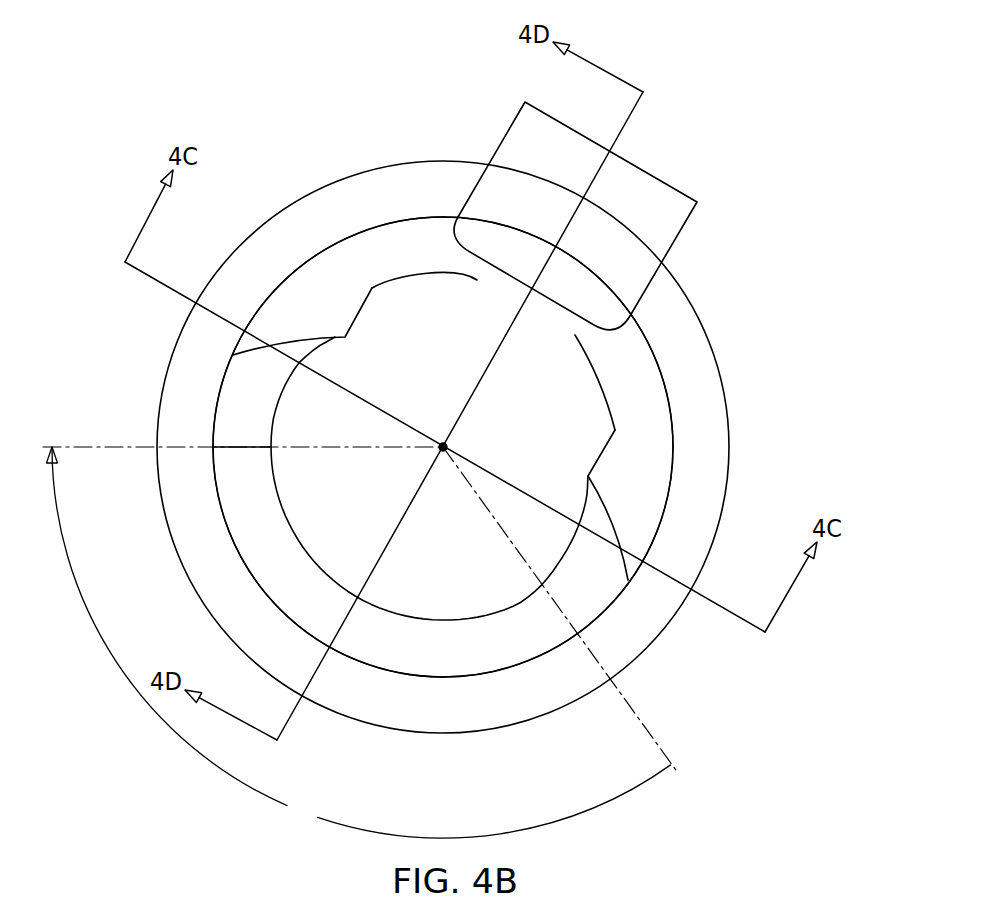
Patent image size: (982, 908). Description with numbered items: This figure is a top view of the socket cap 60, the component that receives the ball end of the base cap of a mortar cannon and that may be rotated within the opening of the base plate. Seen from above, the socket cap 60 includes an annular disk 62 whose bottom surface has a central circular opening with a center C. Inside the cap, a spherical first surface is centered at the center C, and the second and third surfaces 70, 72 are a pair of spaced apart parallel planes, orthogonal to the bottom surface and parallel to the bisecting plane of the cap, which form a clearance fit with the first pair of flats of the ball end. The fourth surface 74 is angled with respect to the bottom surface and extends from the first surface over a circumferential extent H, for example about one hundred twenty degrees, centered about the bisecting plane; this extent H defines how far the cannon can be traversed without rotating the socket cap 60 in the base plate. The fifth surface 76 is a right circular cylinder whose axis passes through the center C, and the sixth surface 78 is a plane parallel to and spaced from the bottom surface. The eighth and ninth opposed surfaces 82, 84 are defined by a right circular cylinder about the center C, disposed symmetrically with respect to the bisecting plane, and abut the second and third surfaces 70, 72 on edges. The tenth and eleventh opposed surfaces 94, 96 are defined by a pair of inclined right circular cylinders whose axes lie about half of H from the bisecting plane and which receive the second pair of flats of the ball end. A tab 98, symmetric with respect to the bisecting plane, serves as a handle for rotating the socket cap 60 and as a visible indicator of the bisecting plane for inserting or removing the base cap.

The socket cap 60 is at (223, 77).
The annular disk 62 is at (173, 545).
The second surface 70 is at (363, 310).
The third surface 72 is at (597, 450).
The fourth surface 74 is at (242, 480).
The fifth surface 76 is at (680, 443).
The sixth surface 78 is at (335, 273).
The eighth surface 82 is at (433, 273).
The ninth surface 84 is at (600, 380).
The tenth surface 94 is at (233, 407).
The eleventh surface 96 is at (595, 588).
The tab 98 is at (512, 177).
The center C is at (443, 447).
The circumferential extent H is at (359, 642).